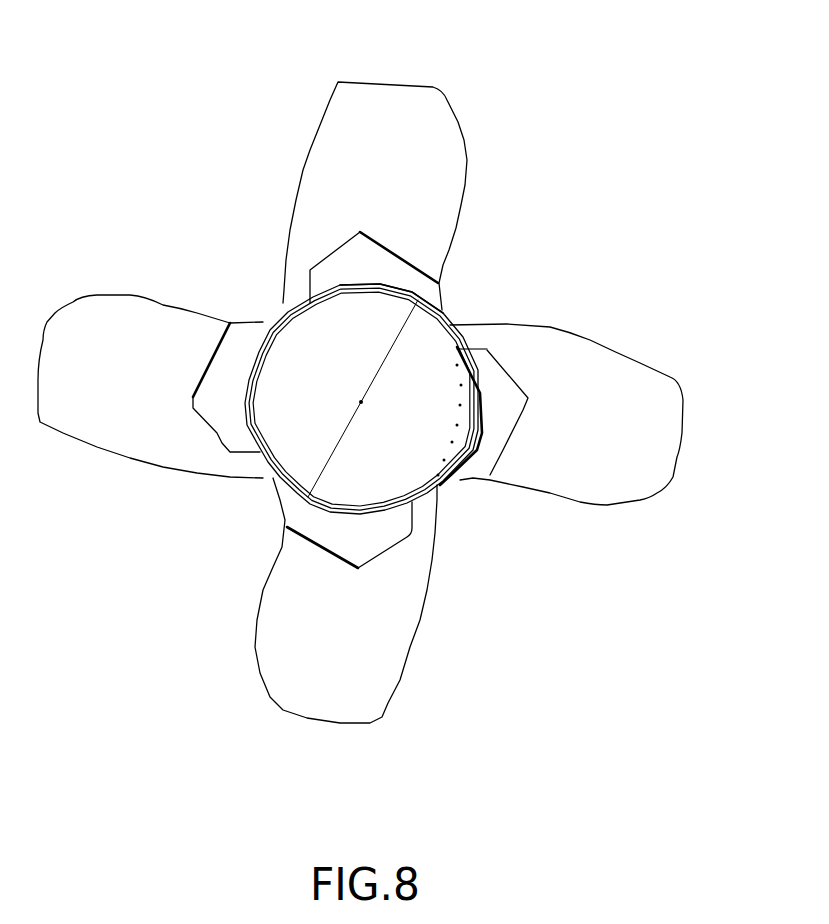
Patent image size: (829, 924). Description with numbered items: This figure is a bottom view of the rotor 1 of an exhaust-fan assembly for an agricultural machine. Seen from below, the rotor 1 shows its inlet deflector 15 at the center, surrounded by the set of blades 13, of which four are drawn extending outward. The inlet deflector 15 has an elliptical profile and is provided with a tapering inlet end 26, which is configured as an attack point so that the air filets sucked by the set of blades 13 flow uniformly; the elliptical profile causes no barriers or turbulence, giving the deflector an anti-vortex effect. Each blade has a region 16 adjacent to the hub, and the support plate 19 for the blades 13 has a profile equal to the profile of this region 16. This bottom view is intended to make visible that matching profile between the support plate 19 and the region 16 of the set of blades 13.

The rotor 1 is at (603, 72).
The set of blades 13 is at (420, 158).
The inlet deflector 15 is at (305, 352).
The region of the blades 16 is at (468, 360).
The support plate 19 is at (420, 296).
The tapering inlet end 26 is at (357, 410).